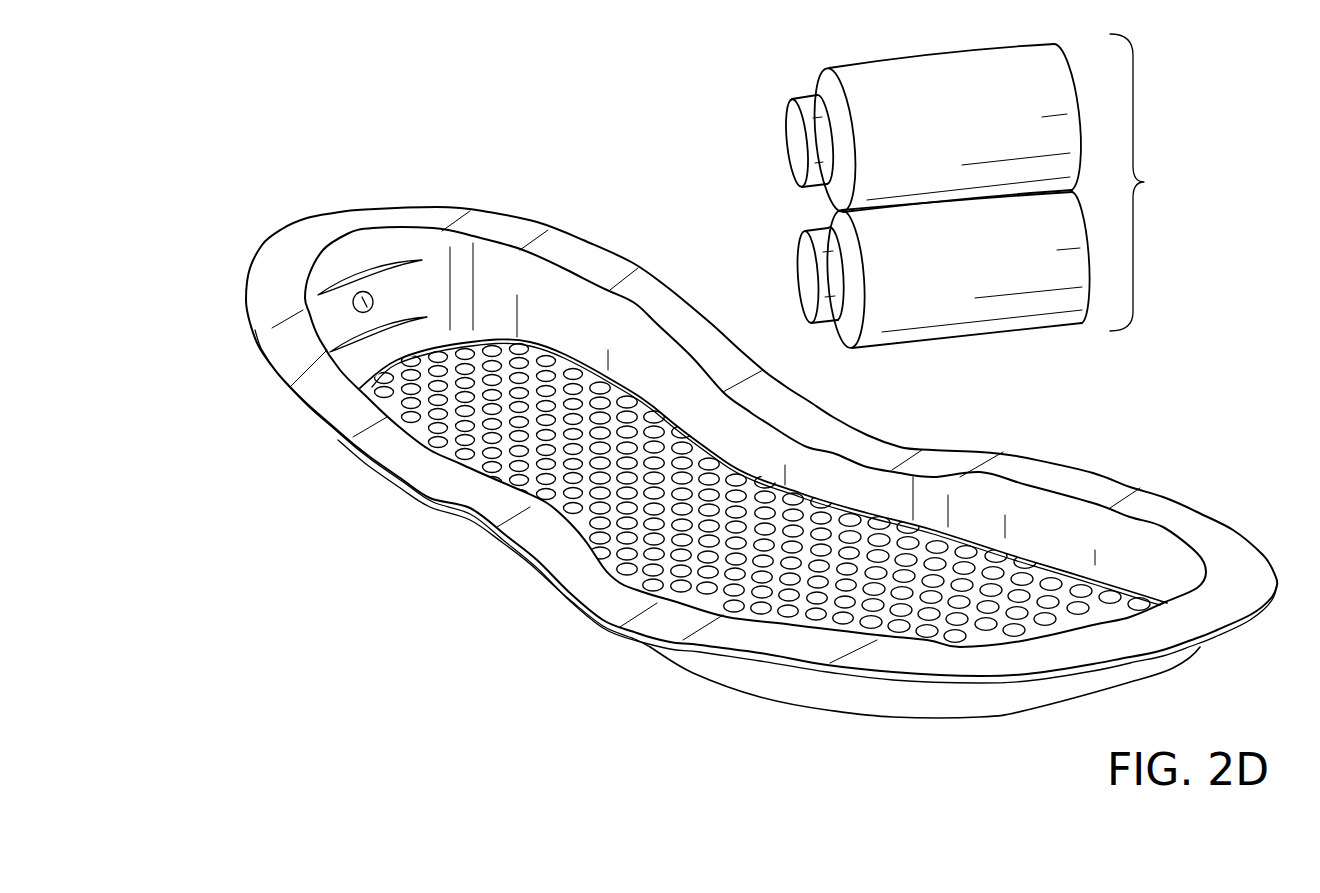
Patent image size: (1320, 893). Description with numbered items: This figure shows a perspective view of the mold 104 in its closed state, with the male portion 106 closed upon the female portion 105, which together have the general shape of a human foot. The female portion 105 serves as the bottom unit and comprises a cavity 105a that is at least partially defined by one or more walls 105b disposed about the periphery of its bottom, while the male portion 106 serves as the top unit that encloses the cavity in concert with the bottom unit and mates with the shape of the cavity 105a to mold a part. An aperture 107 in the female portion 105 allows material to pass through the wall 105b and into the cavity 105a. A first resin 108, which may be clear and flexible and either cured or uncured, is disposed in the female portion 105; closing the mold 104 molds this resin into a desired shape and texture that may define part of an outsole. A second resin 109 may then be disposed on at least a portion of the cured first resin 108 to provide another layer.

The mold 104 is at (211, 177).
The female portion 105 is at (813, 695).
The cavity 105a is at (415, 283).
The walls 105b is at (457, 290).
The male portion 106 is at (517, 233).
The aperture 107 is at (373, 312).
The first resin 108 is at (563, 430).
The second resin 109 is at (989, 191).